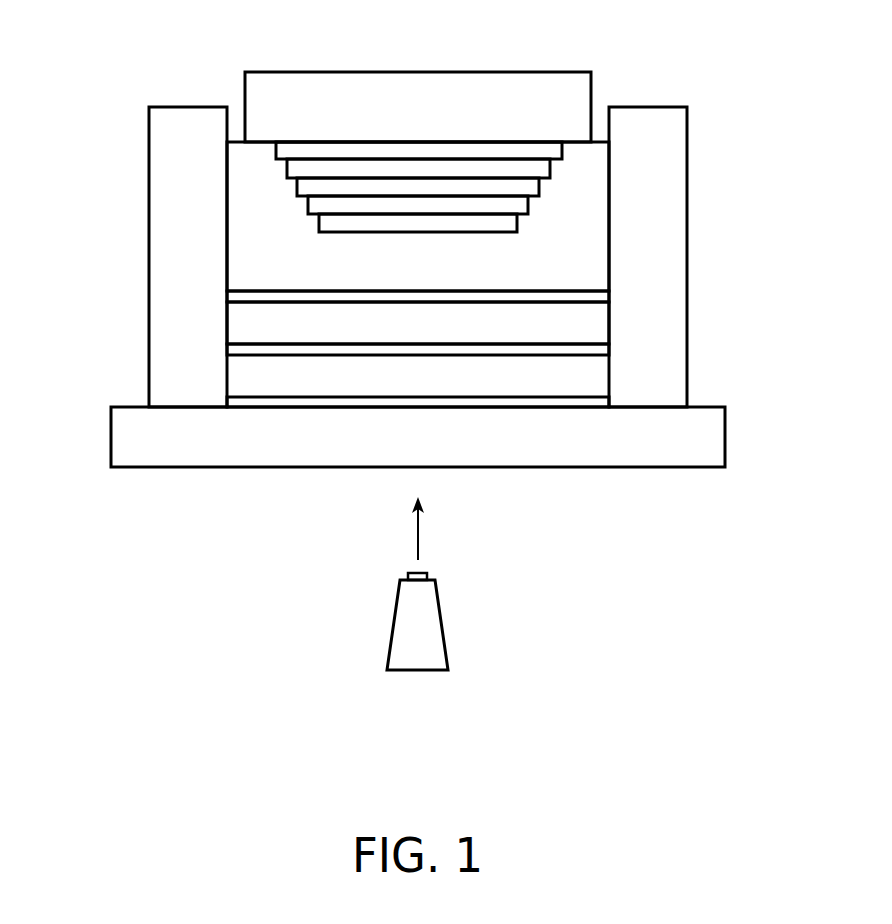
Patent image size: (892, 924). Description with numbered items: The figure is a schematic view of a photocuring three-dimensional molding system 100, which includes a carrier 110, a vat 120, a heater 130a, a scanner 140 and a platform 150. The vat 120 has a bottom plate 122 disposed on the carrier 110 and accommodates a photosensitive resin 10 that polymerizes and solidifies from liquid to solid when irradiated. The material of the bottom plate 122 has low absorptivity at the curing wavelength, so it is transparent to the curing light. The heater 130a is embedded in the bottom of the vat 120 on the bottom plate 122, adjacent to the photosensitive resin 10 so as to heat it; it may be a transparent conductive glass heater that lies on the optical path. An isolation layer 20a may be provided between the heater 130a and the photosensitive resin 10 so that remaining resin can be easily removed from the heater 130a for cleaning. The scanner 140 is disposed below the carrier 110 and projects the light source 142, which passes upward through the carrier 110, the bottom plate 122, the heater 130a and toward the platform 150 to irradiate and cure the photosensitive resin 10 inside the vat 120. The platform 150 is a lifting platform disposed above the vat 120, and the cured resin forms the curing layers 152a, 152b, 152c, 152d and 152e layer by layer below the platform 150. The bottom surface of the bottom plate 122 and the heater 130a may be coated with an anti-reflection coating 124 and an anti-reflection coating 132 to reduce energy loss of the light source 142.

The photocuring three-dimensional molding system 100 is at (98, 64).
The carrier 110 is at (715, 437).
The vat 120 is at (148, 264).
The bottom plate 122 is at (597, 373).
The anti-reflection coating 124 is at (243, 402).
The anti-reflection coating 132 is at (243, 348).
The heater 130a is at (597, 323).
The isolation layer 20a is at (243, 297).
The photosensitive resin 10 is at (597, 261).
The platform 150 is at (583, 118).
The curing layer 152a is at (548, 150).
The curing layer 152b is at (540, 168).
The curing layer 152c is at (530, 187).
The curing layer 152d is at (518, 204).
The curing layer 152e is at (507, 222).
The scanner 140 is at (433, 625).
The light source 142 is at (418, 533).